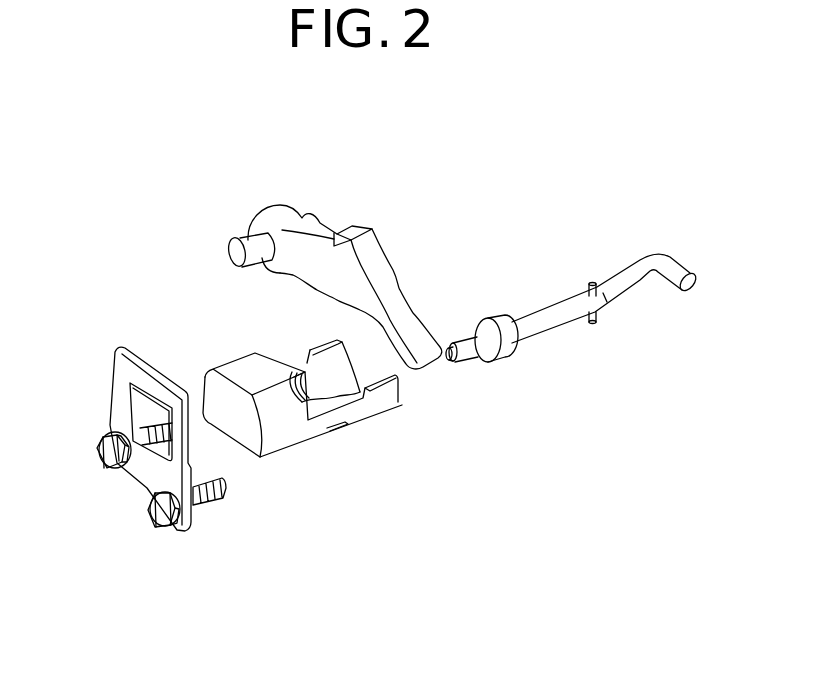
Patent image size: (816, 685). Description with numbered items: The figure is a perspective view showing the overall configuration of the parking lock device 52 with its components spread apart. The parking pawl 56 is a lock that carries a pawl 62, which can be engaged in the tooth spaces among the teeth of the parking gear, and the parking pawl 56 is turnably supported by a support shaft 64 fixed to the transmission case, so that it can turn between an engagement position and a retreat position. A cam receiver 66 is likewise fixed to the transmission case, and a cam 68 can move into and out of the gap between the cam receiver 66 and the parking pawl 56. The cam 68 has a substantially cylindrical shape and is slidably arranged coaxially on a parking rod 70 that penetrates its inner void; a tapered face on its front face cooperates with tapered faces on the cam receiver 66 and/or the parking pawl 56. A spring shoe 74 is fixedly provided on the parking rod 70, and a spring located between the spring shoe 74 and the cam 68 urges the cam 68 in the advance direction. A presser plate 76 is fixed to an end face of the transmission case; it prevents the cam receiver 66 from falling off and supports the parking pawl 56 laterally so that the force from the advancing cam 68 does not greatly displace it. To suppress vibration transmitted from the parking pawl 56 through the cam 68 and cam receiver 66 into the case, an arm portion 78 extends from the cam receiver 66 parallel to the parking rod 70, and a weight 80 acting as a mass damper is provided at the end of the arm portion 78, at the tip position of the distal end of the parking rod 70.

The parking lock device 52 is at (146, 182).
The parking pawl 56 is at (387, 285).
The pawl 62 is at (355, 228).
The support shaft 64 is at (235, 237).
The cam receiver 66 is at (368, 412).
The cam 68 is at (505, 365).
The parking rod 70 is at (548, 315).
The spring shoe 74 is at (590, 283).
The presser plate 76 is at (122, 370).
The arm portion 78 is at (323, 425).
The weight 80 is at (247, 372).